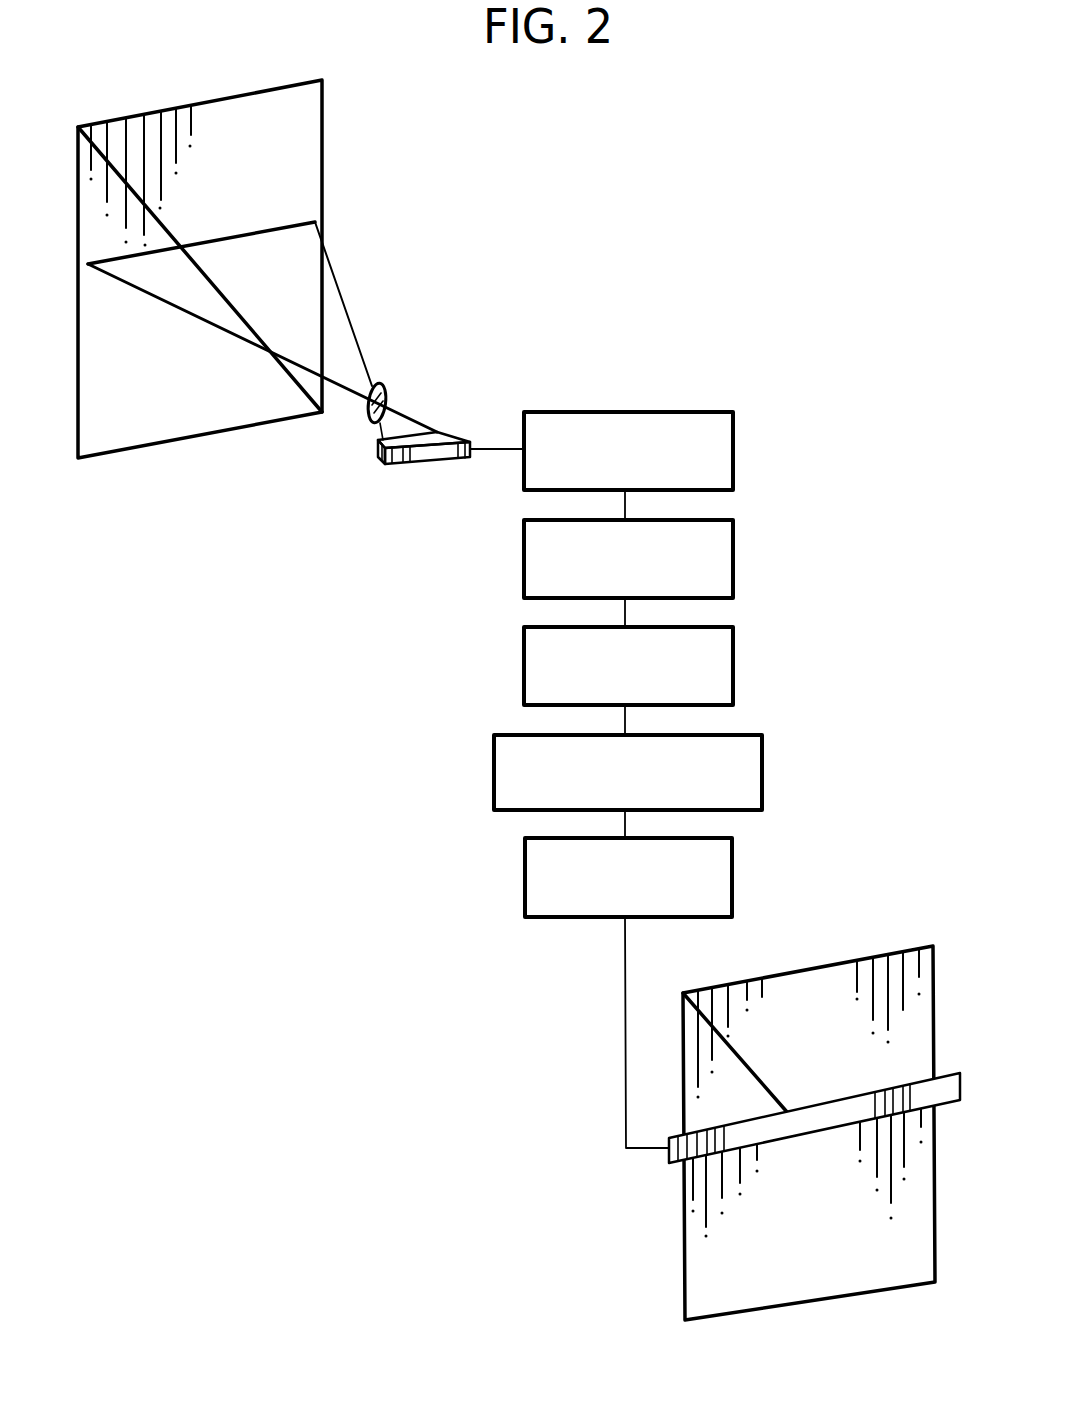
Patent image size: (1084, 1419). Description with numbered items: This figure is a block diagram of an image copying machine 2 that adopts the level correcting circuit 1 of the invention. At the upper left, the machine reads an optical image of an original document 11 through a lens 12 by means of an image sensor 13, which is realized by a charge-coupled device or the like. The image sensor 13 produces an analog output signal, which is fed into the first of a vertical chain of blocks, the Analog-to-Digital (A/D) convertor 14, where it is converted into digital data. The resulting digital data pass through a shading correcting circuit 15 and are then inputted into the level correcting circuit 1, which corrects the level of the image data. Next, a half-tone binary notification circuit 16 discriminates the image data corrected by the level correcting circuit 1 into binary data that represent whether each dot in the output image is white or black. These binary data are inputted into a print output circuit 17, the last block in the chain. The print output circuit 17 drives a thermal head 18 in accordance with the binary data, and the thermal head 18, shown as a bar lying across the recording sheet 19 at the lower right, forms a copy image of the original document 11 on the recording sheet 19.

The image copying machine 2 is at (717, 206).
The original document 11 is at (310, 158).
The lens 12 is at (376, 389).
The image sensor 13 is at (384, 460).
The Analog-to-Digital (A/D) convertor 14 is at (733, 443).
The shading correcting circuit 15 is at (733, 553).
The level correcting circuit 1 is at (733, 663).
The half-tone binary notification circuit 16 is at (762, 773).
The print output circuit 17 is at (732, 887).
The thermal head 18 is at (671, 1161).
The recording sheet 19 is at (878, 958).